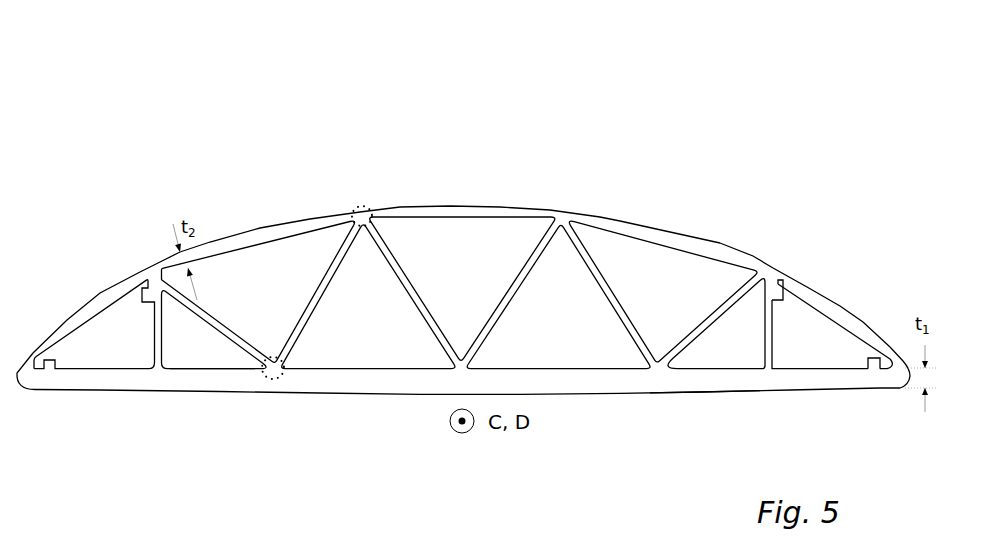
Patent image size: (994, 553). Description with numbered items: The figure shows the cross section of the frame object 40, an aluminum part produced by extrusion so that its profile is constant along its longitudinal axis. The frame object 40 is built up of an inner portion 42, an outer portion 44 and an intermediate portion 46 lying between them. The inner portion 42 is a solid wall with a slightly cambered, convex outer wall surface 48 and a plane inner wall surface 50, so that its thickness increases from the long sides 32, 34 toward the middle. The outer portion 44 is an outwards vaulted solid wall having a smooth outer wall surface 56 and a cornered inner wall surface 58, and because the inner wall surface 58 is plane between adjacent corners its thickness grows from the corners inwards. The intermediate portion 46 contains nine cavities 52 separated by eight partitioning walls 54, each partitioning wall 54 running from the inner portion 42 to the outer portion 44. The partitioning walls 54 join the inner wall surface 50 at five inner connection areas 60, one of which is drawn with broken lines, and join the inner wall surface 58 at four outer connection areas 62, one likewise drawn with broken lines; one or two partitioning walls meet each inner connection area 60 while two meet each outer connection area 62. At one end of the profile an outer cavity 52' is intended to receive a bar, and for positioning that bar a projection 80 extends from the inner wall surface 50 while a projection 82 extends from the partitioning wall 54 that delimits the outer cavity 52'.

The frame object 40 is at (702, 123).
The long side 32 is at (903, 389).
The long side 34 is at (21, 369).
The inner portion 42 is at (706, 383).
The outer portion 44 is at (477, 211).
The intermediate portion 46 is at (352, 288).
The outer wall surface 48 is at (599, 392).
The inner wall surface 50 is at (190, 371).
The cavity 52 is at (663, 251).
The outer cavity 52' is at (823, 372).
The partitioning wall 54 is at (420, 306).
The outer wall surface 56 is at (730, 246).
The inner wall surface 58 is at (824, 311).
The inner connection area 60 is at (277, 380).
The outer connection area 62 is at (362, 204).
The projection 80 is at (873, 371).
The projection 82 is at (782, 290).